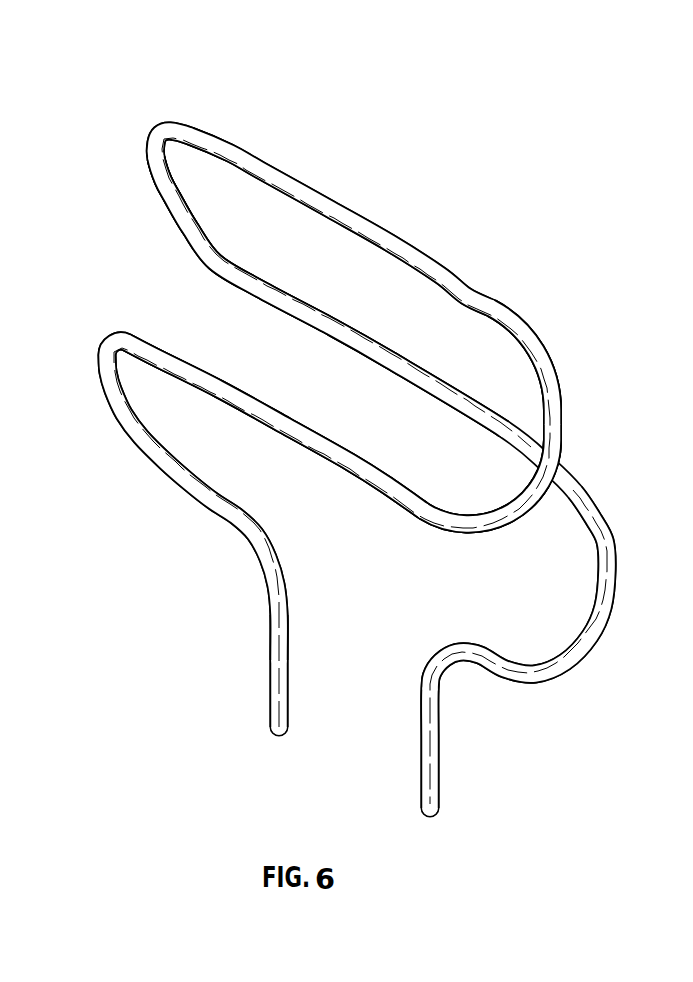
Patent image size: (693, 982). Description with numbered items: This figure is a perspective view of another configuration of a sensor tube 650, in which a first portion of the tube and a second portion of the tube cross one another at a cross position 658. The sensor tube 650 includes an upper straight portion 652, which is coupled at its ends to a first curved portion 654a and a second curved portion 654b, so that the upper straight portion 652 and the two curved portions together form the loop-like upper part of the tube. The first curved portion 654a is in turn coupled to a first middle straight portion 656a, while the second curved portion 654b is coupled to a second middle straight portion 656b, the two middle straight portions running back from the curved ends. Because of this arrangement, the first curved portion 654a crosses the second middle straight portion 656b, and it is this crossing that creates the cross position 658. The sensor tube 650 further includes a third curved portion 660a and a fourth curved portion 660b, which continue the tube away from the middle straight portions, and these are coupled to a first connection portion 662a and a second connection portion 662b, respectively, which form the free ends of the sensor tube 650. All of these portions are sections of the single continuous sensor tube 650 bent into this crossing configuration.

The sensor tube 650 is at (358, 436).
The upper straight portion 652 is at (419, 240).
The first curved portion 654a is at (564, 355).
The second curved portion 654b is at (141, 146).
The first middle straight portion 656a is at (332, 430).
The second middle straight portion 656b is at (421, 358).
The cross position 658 is at (568, 452).
The third curved portion 660a is at (93, 352).
The fourth curved portion 660b is at (620, 613).
The first connection portion 662a is at (258, 728).
The second connection portion 662b is at (453, 814).